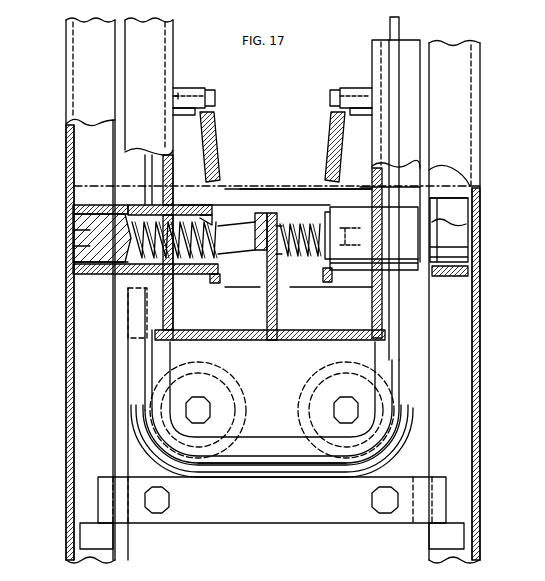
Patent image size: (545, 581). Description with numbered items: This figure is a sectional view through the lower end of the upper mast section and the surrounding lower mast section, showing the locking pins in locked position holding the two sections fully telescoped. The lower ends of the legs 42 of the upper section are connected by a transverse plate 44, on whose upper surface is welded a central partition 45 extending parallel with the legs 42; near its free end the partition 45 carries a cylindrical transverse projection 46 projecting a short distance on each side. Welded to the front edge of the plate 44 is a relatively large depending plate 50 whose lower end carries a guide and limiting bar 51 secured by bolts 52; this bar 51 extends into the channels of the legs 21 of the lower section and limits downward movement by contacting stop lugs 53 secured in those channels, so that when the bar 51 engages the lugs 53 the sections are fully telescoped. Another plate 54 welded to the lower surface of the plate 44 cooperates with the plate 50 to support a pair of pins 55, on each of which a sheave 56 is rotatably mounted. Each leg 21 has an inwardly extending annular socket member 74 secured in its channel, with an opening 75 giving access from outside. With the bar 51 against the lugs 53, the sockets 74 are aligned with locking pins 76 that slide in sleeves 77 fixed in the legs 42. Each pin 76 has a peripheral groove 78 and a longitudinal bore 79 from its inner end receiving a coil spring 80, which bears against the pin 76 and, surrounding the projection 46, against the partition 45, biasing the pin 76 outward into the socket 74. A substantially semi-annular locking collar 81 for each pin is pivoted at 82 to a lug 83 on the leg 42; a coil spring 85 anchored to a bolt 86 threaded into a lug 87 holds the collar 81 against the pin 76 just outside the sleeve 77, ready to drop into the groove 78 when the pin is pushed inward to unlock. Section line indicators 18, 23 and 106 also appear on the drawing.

The section line 18- 18 is at (258, 537).
The leg 21 is at (510, 500).
The transverse frame member 23 is at (262, 189).
The leg 42 is at (173, 70).
The transverse plate 44 is at (216, 330).
The central partition 45 is at (278, 312).
The cylindrical transverse projection 46 is at (262, 260).
The depending plate 50 is at (408, 464).
The guide and limiting bar 51 is at (354, 518).
The bolt 52 is at (170, 504).
The stop lug 53 is at (110, 538).
The plate 54 is at (272, 424).
The pin 55 is at (218, 388).
The sheave 56 is at (218, 462).
The annular socket member 74 is at (78, 208).
The opening 75 is at (73, 242).
The locking pin 76 is at (82, 256).
The sleeve 77 is at (132, 272).
The peripheral groove 78 is at (168, 210).
The longitudinal bore 79 is at (128, 236).
The coil spring 80 is at (240, 222).
The locking collar 81 is at (216, 280).
The pivot 82 is at (346, 245).
The lug 83 is at (346, 229).
The coil spring 85 is at (214, 136).
The bolt 86 is at (192, 93).
The lug 87 is at (186, 114).
The guide strip 106 is at (398, 24).